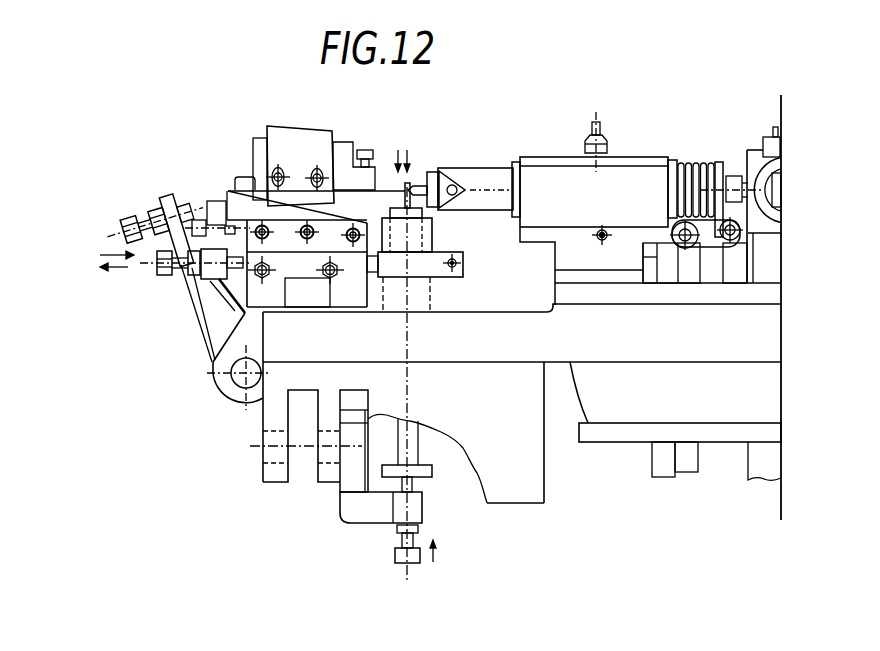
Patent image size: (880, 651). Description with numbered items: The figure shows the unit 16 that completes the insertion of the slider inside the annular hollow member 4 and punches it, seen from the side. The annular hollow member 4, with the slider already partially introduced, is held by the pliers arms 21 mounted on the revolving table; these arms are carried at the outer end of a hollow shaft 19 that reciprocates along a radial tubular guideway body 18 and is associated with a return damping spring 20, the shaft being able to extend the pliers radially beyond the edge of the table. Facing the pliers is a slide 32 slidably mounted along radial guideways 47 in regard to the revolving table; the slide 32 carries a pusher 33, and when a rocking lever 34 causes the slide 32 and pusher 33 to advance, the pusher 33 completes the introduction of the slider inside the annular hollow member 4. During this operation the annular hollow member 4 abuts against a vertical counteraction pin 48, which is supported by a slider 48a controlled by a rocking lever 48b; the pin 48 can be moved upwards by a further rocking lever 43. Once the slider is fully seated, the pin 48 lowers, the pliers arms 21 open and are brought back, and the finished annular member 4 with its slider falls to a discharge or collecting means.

The annular hollow member 4 is at (408, 183).
The unit 16 is at (395, 168).
The supporting radial tubular guideway body 18 is at (637, 162).
The hollow shaft 19 is at (488, 175).
The return damping spring 20 is at (695, 162).
The pliers arms 21 is at (415, 194).
The slide 32 is at (243, 208).
The pusher 33 is at (383, 181).
The rocking lever 34 is at (175, 210).
The rocking lever 43 is at (362, 511).
The radial guideways 47 is at (348, 228).
The vertical counteraction pin 48 is at (408, 184).
The slider 48a is at (395, 268).
The rocking lever 48b is at (218, 323).